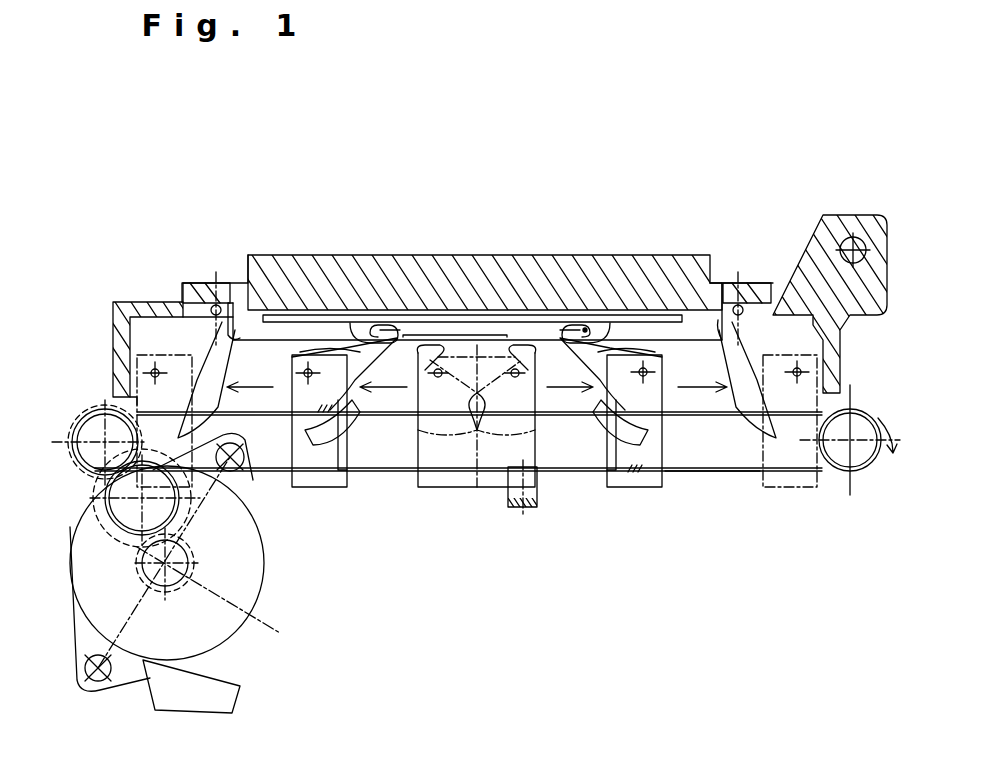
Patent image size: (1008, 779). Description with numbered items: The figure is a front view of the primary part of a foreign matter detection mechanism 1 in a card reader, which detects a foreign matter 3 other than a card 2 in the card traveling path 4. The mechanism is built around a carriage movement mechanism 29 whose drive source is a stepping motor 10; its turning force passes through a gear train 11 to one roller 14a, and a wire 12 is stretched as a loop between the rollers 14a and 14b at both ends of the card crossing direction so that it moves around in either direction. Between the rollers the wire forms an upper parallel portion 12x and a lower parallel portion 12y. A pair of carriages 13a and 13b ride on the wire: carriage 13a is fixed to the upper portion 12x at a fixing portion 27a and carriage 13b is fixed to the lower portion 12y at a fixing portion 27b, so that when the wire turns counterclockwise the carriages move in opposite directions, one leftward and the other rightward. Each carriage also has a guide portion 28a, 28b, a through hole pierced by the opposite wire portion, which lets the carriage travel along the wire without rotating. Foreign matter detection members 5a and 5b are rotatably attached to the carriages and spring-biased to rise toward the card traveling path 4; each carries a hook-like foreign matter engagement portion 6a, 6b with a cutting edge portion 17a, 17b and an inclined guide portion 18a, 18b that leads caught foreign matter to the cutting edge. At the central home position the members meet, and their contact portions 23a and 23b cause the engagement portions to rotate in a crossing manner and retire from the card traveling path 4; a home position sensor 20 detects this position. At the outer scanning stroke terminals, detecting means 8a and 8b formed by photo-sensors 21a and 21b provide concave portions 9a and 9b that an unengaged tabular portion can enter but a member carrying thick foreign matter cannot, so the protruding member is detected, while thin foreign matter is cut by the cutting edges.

The foreign matter detection mechanism 1 is at (85, 195).
The card 2 is at (463, 315).
The foreign matter 3 is at (575, 300).
The card traveling path 4 is at (697, 320).
The foreign matter detection member 5a is at (355, 350).
The foreign matter detection member 5b is at (600, 352).
The foreign matter engagement portion 6a is at (378, 325).
The foreign matter engagement portion 6b is at (585, 327).
The detecting means 8a is at (183, 248).
The detecting means 8b is at (785, 200).
The concave portion 9a is at (180, 300).
The concave portion 9b is at (782, 245).
The stepping motor 10 is at (230, 622).
The gear train 11 is at (40, 452).
The wire 12 is at (733, 487).
The upper parallel portion 12x is at (418, 487).
The lower parallel portion 12y is at (693, 487).
The carriage 13a is at (318, 487).
The carriage 13b is at (615, 487).
The roller 14a is at (83, 412).
The roller 14b is at (867, 480).
The cutting edge portion 17a is at (370, 330).
The cutting edge portion 17b is at (555, 335).
The guide portion 18a is at (292, 350).
The guide portion 18b is at (722, 380).
The home position sensor 20 is at (515, 510).
The photo-sensor 21a is at (205, 290).
The photo-sensor 21b is at (740, 280).
The contact portion 23a is at (367, 470).
The contact portion 23b is at (577, 485).
The fixing portion 27a is at (312, 405).
The fixing portion 27b is at (637, 478).
The guide portion 28a is at (337, 445).
The guide portion 28b is at (650, 417).
The carriage movement mechanism 29 is at (325, 605).